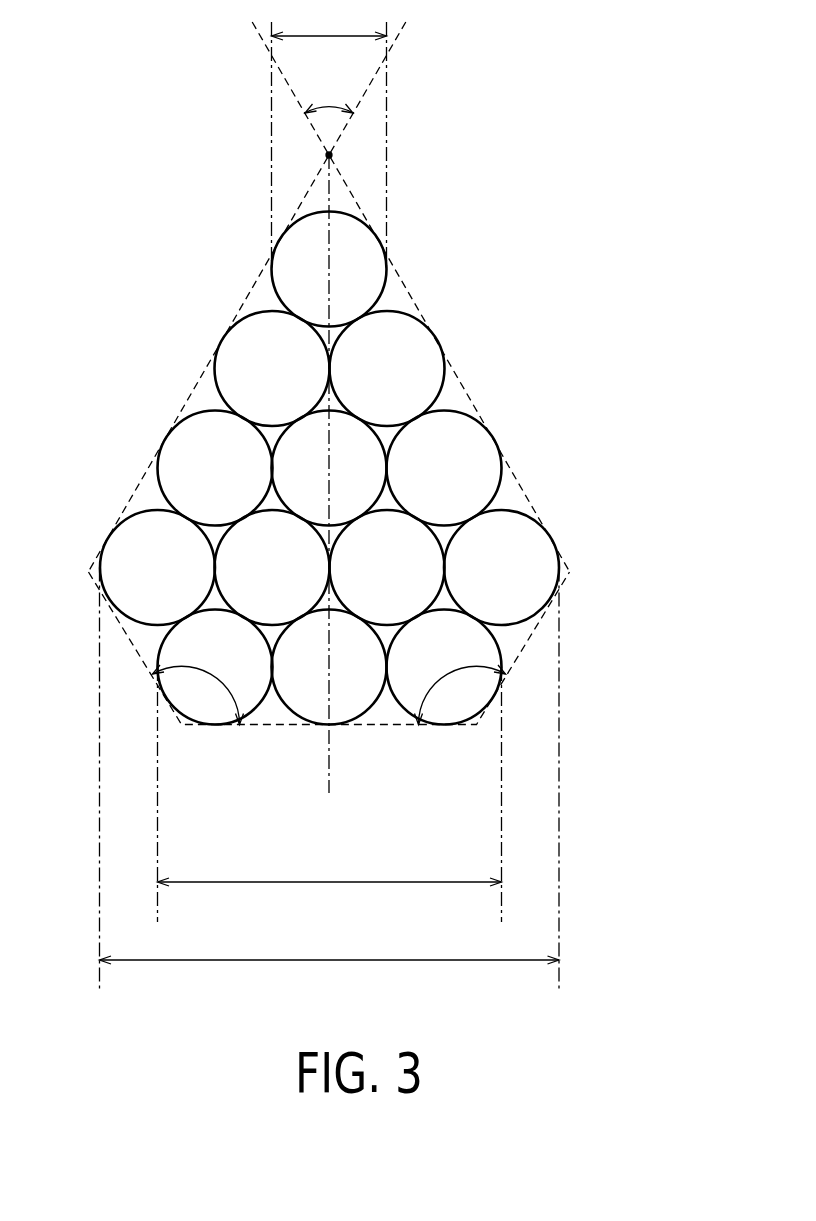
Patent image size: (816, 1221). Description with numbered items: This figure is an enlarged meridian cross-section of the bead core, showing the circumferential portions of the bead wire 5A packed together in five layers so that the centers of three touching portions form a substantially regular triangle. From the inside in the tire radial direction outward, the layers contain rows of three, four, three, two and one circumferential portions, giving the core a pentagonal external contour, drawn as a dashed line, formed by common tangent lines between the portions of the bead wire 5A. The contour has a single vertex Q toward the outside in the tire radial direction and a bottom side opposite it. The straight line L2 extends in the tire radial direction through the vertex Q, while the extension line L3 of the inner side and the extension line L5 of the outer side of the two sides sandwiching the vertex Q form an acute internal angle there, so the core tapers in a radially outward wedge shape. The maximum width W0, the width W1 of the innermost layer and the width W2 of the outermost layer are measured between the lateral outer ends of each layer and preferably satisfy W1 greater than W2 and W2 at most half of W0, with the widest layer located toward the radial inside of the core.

The bead wire 5A is at (445, 468).
The extension line of the inner side L3 is at (197, 381).
The extension line of the outer side L5 is at (465, 382).
The straight line extending in the tire radial direction L2 is at (330, 792).
The vertex Q is at (329, 155).
The width of the outermost layer W2 is at (329, 140).
The width of the innermost layer W1 is at (330, 794).
The maximum width W0 is at (330, 780).